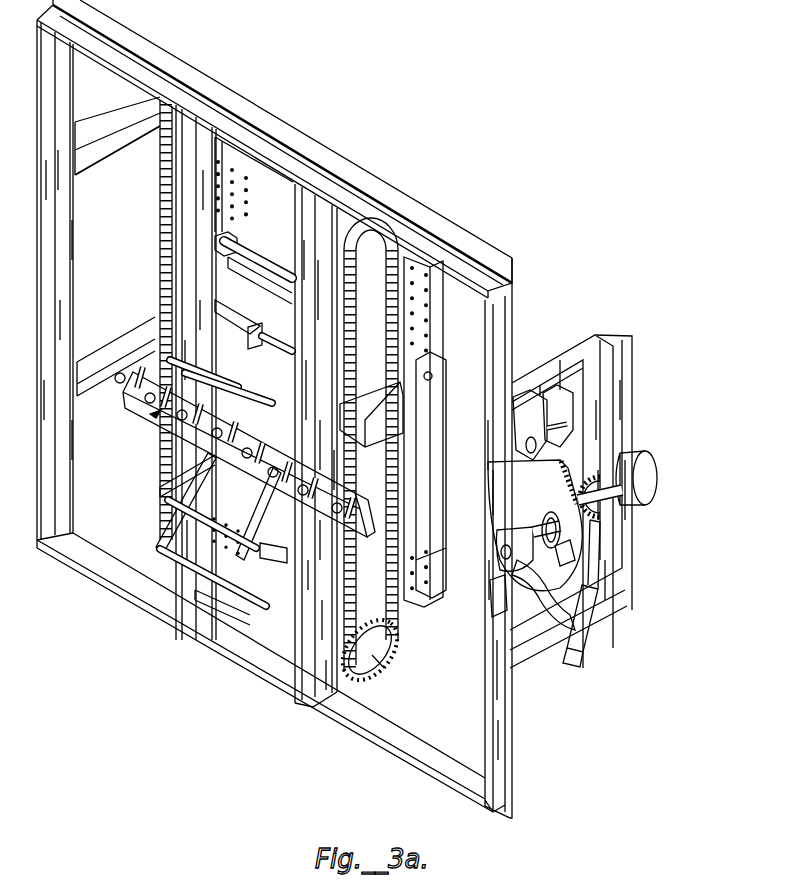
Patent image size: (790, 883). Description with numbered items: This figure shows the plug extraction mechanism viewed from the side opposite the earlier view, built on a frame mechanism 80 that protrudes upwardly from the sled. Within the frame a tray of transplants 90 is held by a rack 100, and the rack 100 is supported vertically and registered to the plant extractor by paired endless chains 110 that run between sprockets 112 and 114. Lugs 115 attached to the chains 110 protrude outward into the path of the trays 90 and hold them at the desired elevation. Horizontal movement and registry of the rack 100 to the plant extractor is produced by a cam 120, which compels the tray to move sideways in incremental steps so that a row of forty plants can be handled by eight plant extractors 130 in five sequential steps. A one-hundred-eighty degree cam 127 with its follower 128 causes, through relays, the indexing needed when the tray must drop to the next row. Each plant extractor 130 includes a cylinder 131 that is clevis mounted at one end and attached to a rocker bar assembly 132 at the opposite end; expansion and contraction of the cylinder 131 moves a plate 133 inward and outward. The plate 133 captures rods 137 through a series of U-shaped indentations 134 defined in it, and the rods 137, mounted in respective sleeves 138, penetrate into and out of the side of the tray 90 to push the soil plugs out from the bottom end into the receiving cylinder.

The frame mechanism 80 is at (512, 752).
The tray of transplants 90 is at (437, 318).
The rack 100 is at (483, 425).
The endless chains 110 is at (160, 238).
The sprocket 112 is at (382, 670).
The sprocket 114 is at (368, 236).
The lugs 115 is at (483, 425).
The cam 120 is at (533, 622).
The 180° cam 127 is at (548, 540).
The follower 128 is at (548, 552).
The plant extractor 130 is at (150, 415).
The cylinder 131 is at (245, 603).
The rocker bar assembly 132 is at (236, 562).
The plate 133 is at (345, 512).
The U-shaped indentations 134 is at (280, 440).
The rods 137 is at (222, 428).
The sleeves 138 is at (243, 326).